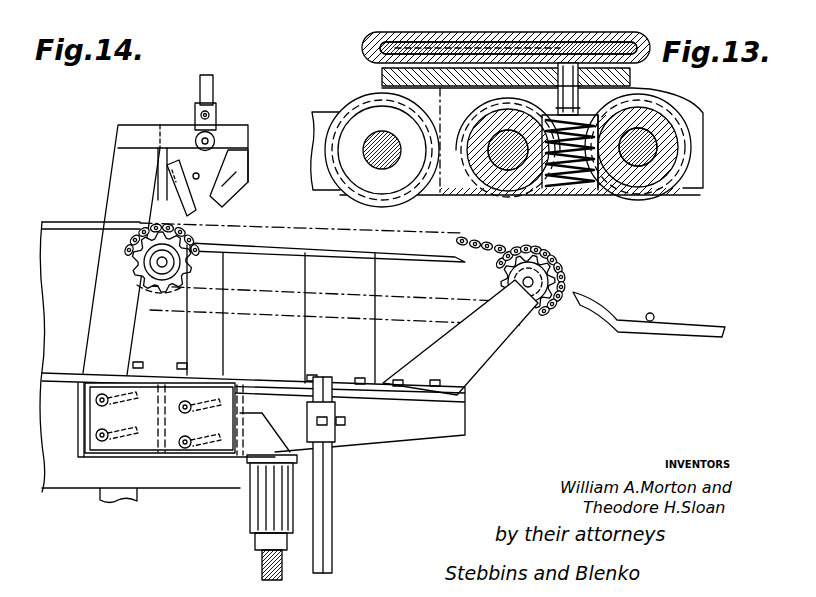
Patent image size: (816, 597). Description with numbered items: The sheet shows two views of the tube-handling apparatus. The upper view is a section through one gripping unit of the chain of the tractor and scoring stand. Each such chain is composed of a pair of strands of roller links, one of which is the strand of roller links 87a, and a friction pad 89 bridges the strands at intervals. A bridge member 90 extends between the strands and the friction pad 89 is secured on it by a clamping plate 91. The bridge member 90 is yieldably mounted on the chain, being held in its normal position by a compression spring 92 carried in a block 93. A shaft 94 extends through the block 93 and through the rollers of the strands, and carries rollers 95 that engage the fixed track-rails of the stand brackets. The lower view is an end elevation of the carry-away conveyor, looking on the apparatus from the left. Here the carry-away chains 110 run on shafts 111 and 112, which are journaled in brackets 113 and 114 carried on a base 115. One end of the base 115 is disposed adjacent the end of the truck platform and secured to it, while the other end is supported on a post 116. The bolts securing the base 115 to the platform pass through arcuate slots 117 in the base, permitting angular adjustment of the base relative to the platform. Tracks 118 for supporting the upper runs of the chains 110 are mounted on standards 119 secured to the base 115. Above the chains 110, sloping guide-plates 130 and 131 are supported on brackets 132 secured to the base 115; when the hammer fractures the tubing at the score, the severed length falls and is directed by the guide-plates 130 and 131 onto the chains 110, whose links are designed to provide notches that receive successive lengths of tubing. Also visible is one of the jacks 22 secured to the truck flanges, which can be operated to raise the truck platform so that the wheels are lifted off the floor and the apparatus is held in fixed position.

In FIG. 14, the jack 22 is at (262, 518).
In FIG. 13, the strand of roller links 87a is at (313, 121).
In FIG. 13, the friction pad 89 is at (522, 38).
In FIG. 13, the bridge member 90 is at (395, 77).
In FIG. 13, the clamping plate 91 is at (483, 40).
In FIG. 13, the compression spring 92 is at (576, 194).
In FIG. 13, the block 93 is at (642, 190).
In FIG. 13, the shaft 94 is at (706, 142).
In FIG. 13, the roller 95 is at (345, 193).
In FIG. 14, the chain 110 is at (488, 238).
In FIG. 14, the shaft 111 is at (150, 262).
In FIG. 14, the shaft 112 is at (552, 274).
In FIG. 14, the bracket 113 is at (150, 310).
In FIG. 14, the bracket 114 is at (470, 362).
In FIG. 14, the base 115 is at (412, 428).
In FIG. 14, the post 116 is at (333, 505).
In FIG. 14, the arcuate slot 117 is at (207, 447).
In FIG. 14, the track 118 is at (270, 249).
In FIG. 14, the standard 119 is at (365, 280).
In FIG. 14, the sloping guide-plate 130 is at (192, 183).
In FIG. 14, the sloping guide-plate 131 is at (240, 177).
In FIG. 14, the bracket 132 is at (125, 179).